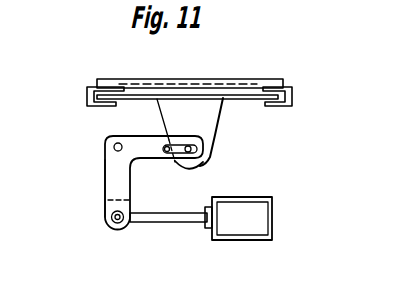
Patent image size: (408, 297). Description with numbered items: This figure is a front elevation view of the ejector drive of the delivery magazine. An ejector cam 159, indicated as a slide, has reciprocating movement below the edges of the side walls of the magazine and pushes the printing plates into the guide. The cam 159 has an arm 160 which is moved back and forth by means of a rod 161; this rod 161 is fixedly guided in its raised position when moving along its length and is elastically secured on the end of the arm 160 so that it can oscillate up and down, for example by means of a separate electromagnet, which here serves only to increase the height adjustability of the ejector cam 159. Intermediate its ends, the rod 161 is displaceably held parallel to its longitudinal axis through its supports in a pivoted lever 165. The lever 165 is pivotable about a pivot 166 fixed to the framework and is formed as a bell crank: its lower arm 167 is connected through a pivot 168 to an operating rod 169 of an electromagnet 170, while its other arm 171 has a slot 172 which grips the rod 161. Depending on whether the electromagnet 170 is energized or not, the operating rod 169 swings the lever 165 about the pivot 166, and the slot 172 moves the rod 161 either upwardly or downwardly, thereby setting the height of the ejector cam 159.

The ejector cam 159 is at (258, 83).
The arm 160 is at (205, 120).
The rod 161 is at (192, 148).
The pivoted lever 165 is at (107, 178).
The pivot 166 is at (112, 146).
The lower arm 167 is at (115, 190).
The pivot 168 is at (117, 224).
The operating rod 169 is at (178, 222).
The electromagnet 170 is at (227, 227).
The arm 171 is at (178, 142).
The slot 172 is at (203, 163).